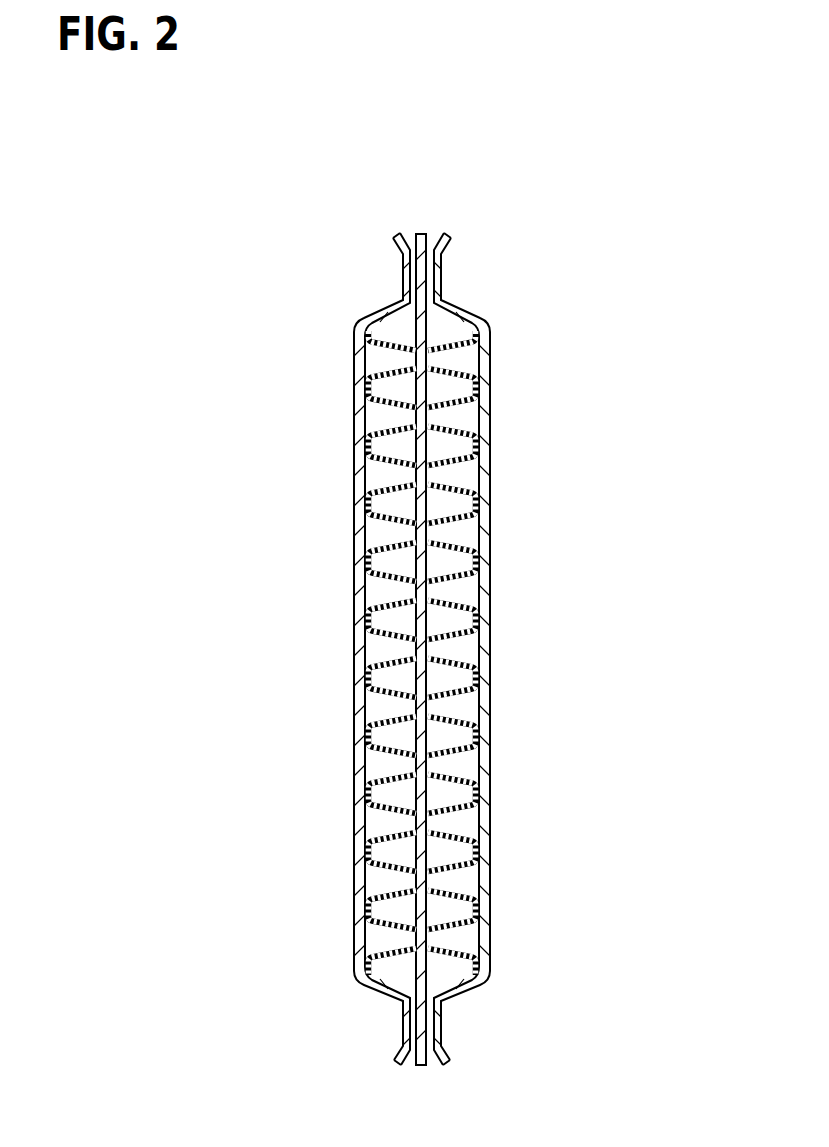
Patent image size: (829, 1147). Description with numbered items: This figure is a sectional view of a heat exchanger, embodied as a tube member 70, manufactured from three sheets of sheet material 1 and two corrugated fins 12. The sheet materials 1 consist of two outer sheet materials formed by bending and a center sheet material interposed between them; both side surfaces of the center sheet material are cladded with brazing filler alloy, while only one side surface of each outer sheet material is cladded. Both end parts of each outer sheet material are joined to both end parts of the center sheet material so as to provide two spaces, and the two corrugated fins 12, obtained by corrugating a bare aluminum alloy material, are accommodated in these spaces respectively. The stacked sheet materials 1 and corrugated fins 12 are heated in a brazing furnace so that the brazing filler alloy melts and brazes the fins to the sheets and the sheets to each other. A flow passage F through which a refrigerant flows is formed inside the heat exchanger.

The tube member 70 is at (521, 246).
The sheet material 1 is at (358, 421).
The corrugated fin 12 is at (390, 577).
The flow passage F is at (465, 705).